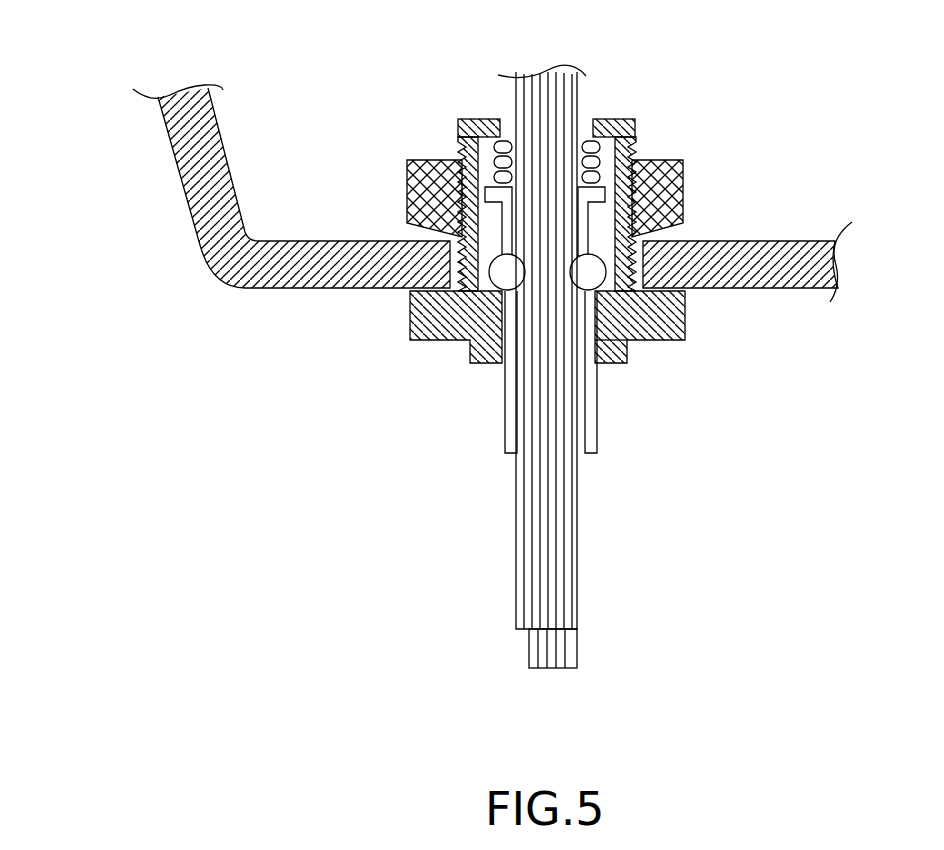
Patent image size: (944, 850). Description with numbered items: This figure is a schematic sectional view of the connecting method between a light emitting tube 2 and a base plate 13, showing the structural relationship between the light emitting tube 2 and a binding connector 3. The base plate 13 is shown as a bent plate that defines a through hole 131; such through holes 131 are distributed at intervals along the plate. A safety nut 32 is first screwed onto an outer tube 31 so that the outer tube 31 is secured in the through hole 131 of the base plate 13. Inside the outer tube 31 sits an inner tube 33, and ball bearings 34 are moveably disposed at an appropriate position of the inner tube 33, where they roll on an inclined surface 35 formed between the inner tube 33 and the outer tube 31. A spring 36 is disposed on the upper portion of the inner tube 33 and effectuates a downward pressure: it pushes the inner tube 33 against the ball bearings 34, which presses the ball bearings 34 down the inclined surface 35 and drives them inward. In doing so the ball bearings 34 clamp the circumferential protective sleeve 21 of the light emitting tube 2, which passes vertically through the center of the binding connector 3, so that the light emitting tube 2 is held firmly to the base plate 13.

The light emitting tube 2 is at (582, 366).
The circumferential protective sleeve 21 is at (522, 493).
The binding connector 3 is at (545, 256).
The outer tube 31 is at (627, 381).
The safety nut 32 is at (682, 177).
The inner tube 33 is at (508, 410).
The ball bearings 34 is at (622, 360).
The inclined surface 35 is at (680, 312).
The spring 36 is at (488, 122).
The base plate 13 is at (249, 228).
The through hole 131 is at (440, 282).